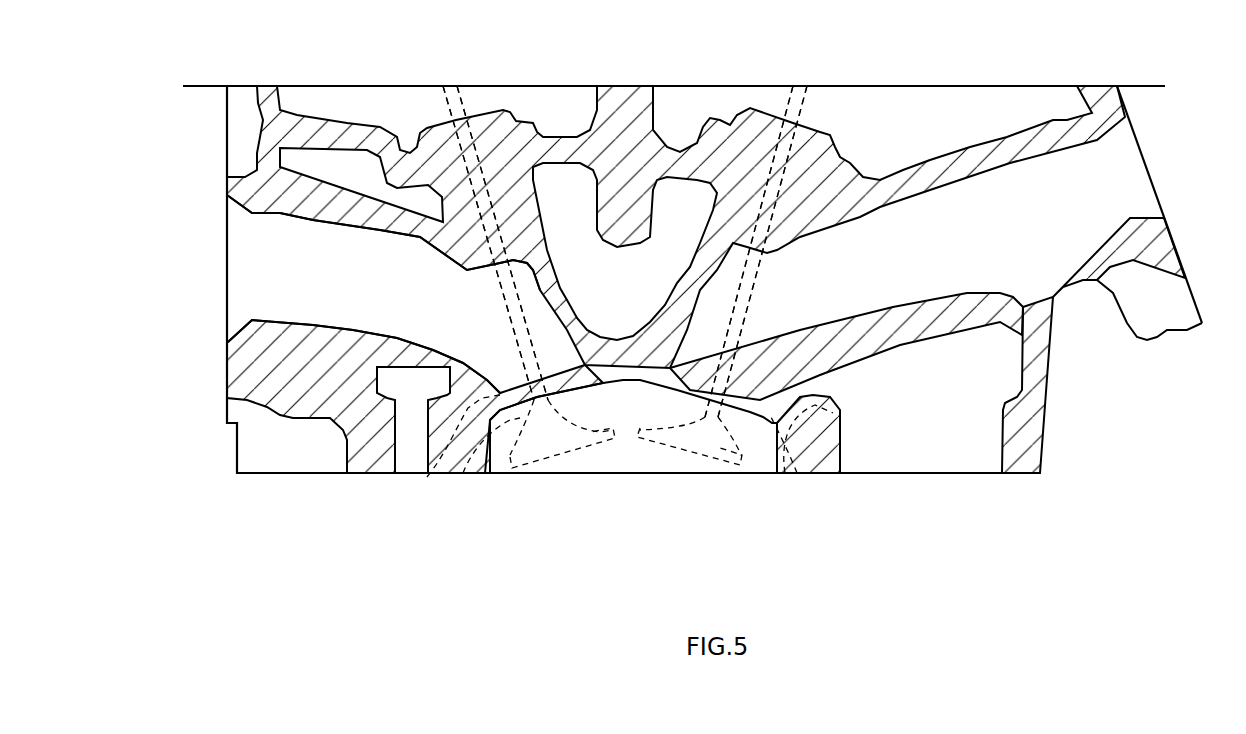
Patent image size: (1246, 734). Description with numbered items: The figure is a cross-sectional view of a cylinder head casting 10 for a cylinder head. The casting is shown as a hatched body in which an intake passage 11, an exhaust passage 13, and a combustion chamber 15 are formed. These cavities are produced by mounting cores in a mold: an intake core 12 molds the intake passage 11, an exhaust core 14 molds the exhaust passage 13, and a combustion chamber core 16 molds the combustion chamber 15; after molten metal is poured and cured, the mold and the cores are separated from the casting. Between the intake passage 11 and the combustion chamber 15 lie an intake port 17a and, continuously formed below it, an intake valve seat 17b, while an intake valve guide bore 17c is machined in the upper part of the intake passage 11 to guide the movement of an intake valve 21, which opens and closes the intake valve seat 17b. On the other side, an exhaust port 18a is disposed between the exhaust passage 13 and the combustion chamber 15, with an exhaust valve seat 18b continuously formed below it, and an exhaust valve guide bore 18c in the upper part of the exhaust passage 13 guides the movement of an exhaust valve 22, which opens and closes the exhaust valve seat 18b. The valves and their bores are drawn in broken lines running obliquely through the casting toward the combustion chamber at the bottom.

The cylinder head casting 10 is at (188, 395).
The intake passage 11 is at (1032, 155).
The intake core 12 is at (1090, 190).
The exhaust passage 13 is at (303, 317).
The exhaust core 14 is at (290, 265).
The combustion chamber 15 is at (718, 445).
The combustion chamber core 16 is at (620, 463).
The intake port 17a is at (823, 473).
The intake valve seat 17b is at (797, 473).
The intake valve guide bore 17c is at (787, 167).
The exhaust port 18a is at (427, 477).
The exhaust valve seat 18b is at (470, 470).
The exhaust valve guide bore 18c is at (482, 163).
The intake valve 21 is at (752, 312).
The exhaust valve 22 is at (505, 298).